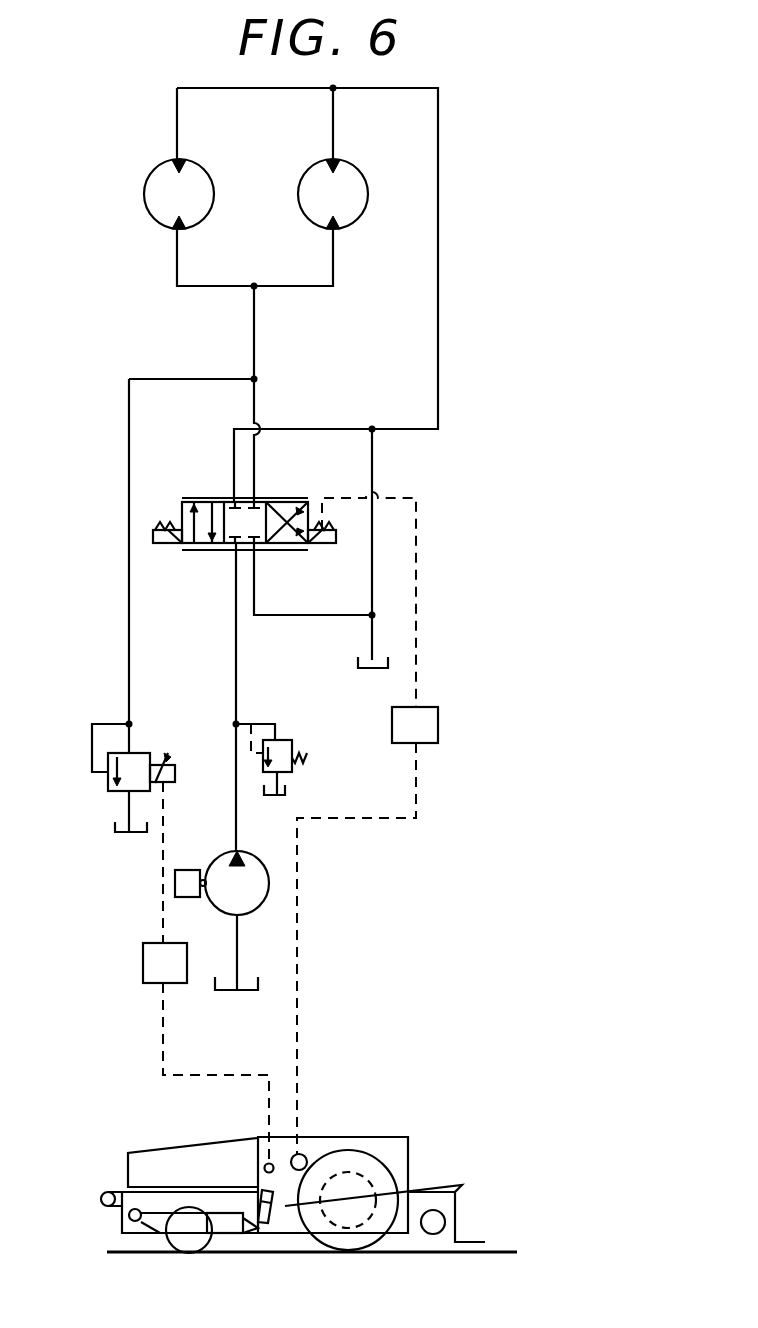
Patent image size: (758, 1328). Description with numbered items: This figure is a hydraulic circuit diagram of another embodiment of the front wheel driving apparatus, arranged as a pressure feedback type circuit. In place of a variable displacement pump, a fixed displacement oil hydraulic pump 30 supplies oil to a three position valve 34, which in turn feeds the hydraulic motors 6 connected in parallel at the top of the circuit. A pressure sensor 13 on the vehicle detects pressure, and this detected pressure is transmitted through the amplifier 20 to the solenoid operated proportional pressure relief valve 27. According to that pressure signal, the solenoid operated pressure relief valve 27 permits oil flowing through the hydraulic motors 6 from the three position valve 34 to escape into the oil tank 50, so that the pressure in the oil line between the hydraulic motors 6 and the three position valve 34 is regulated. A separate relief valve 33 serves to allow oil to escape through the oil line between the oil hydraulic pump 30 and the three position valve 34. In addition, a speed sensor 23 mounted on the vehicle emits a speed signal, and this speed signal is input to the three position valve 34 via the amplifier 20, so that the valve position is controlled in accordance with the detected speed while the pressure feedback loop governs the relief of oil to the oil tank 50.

The hydraulic motors 6 is at (152, 217).
The three position valve 34 is at (173, 545).
The relief valve 33 is at (282, 740).
The solenoid operated proportional pressure relief valve 27 is at (108, 790).
The fixed displacement oil hydraulic pump 30 is at (268, 888).
The oil tank 50 is at (250, 992).
The amplifier 20 is at (143, 960).
The speed sensor 23 is at (303, 1157).
The pressure sensor 13 is at (263, 1170).